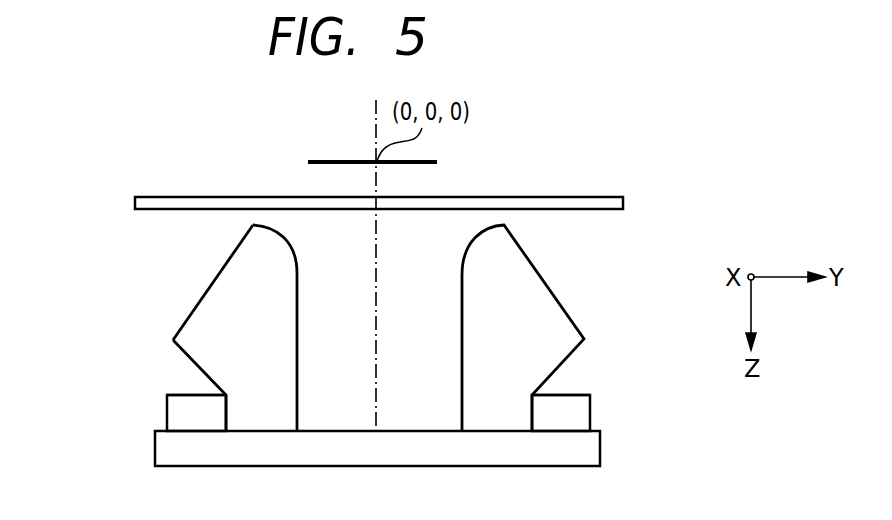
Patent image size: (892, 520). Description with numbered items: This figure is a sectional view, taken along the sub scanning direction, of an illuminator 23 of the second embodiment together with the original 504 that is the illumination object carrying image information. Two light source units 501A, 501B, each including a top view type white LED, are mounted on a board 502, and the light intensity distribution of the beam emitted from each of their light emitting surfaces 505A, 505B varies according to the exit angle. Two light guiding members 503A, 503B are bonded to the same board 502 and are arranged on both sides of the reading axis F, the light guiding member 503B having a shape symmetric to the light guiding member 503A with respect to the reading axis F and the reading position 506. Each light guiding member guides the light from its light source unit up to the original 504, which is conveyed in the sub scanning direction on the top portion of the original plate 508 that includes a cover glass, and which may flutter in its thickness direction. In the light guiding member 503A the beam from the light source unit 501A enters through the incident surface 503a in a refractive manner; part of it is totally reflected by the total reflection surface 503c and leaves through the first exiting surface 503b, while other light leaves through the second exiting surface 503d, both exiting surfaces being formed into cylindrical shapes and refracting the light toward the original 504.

The illuminator 23 is at (104, 249).
The reading axis F is at (378, 281).
The original 504 is at (330, 160).
The reading position 506 is at (377, 163).
The original plate 508 is at (225, 196).
The board 502 is at (593, 447).
The light source unit 501A is at (183, 410).
The light source unit 501B is at (582, 412).
The light emitting surface 505A is at (192, 394).
The light emitting surface 505B is at (562, 393).
The light guiding member 503A is at (220, 323).
The light guiding member 503B is at (527, 285).
The incident surface 503a is at (147, 356).
The first exiting surface 503b is at (283, 233).
The total reflection surface 503c is at (228, 255).
The second exiting surface 503d is at (298, 330).